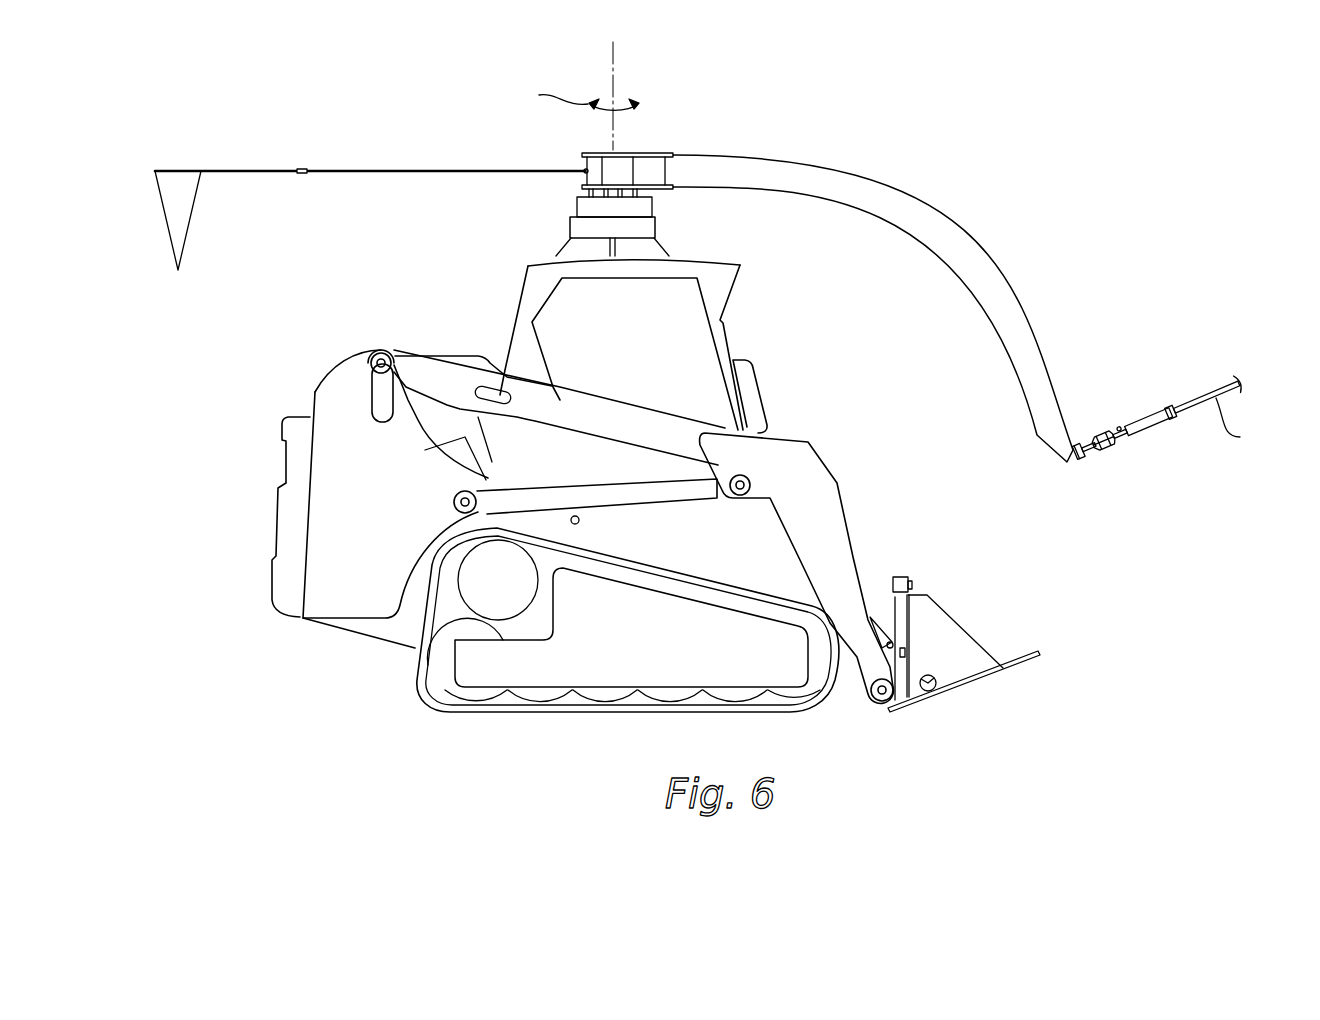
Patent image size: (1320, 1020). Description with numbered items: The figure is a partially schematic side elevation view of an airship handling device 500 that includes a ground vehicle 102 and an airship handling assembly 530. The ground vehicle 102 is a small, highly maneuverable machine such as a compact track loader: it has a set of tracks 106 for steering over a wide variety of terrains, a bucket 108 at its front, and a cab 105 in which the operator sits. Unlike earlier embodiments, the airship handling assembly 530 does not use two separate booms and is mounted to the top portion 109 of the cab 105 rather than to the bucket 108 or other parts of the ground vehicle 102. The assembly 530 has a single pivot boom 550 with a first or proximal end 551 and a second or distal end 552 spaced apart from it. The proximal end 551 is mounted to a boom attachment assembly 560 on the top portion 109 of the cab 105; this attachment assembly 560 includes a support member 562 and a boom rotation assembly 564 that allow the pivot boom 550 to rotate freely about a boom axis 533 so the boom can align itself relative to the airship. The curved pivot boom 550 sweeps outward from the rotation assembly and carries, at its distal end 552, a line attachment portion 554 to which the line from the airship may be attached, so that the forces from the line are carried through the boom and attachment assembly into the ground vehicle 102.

The airship handling device 500 is at (1080, 125).
The boom axis 533 is at (613, 70).
The airship handling assembly 530 is at (915, 180).
The first or proximal end 551 is at (625, 153).
The pivot boom 550 is at (1010, 284).
The boom attachment assembly 560 is at (540, 243).
The boom rotation assembly 564 is at (658, 228).
The support member 562 is at (658, 252).
The second or distal end 552 is at (1077, 443).
The line attachment portion 554 is at (1087, 470).
The ground vehicle 102 is at (295, 385).
The cab 105 is at (628, 343).
The top portion 109 is at (522, 256).
The tracks 106 is at (598, 717).
The bucket 108 is at (967, 675).